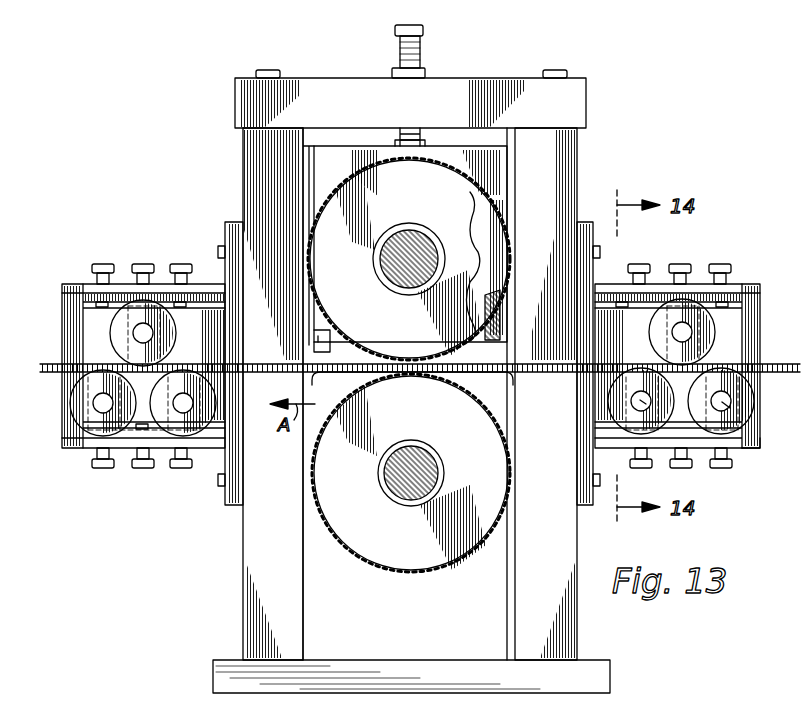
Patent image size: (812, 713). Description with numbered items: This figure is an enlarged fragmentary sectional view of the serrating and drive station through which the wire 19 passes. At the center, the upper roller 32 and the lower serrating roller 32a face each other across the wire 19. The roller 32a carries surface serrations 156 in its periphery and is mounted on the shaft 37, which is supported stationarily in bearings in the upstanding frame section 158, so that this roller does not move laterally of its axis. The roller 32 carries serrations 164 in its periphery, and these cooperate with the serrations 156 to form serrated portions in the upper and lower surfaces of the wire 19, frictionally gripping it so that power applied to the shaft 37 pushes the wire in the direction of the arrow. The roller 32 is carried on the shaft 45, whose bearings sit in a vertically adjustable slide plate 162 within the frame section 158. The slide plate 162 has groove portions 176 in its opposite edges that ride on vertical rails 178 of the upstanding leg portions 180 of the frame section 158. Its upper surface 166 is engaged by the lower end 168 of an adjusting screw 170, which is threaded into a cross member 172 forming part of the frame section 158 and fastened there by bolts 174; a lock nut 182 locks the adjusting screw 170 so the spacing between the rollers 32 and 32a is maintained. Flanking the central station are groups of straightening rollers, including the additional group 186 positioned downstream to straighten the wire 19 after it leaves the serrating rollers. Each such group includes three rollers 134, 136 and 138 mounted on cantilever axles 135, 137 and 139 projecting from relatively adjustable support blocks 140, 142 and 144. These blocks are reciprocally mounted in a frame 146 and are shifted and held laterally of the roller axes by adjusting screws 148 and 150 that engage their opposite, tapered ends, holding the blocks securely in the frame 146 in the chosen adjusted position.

The wire 19 is at (46, 364).
The roller 32 is at (466, 198).
The serrating roller 32a is at (498, 502).
The shaft 37 is at (394, 480).
The shaft 45 is at (390, 282).
The roller 134 is at (732, 282).
The cantilever axle 135 is at (686, 330).
The roller 136 is at (730, 400).
The cantilever axle 137 is at (725, 405).
The roller 138 is at (670, 465).
The cantilever axle 139 is at (642, 400).
The support block 140 is at (680, 378).
The support block 142 is at (742, 322).
The support block 144 is at (624, 300).
The frame 146 is at (750, 452).
The adjusting screws 148 is at (670, 268).
The adjusting screws 150 is at (642, 470).
The surface serrations 156 is at (388, 570).
The upstanding frame section 158 is at (243, 148).
The slide plate 162 is at (310, 180).
The serrations 164 is at (330, 336).
The upper surface 166 is at (400, 148).
The lower end 168 is at (445, 146).
The adjusting screw 170 is at (424, 31).
The cross member 172 is at (350, 58).
The bolts 174 is at (290, 52).
The groove portions 176 is at (494, 290).
The vertical rails 178 is at (500, 318).
The upstanding leg portions 180 is at (243, 202).
The lock nut 182 is at (425, 72).
The group of straightening rollers 186 is at (118, 280).